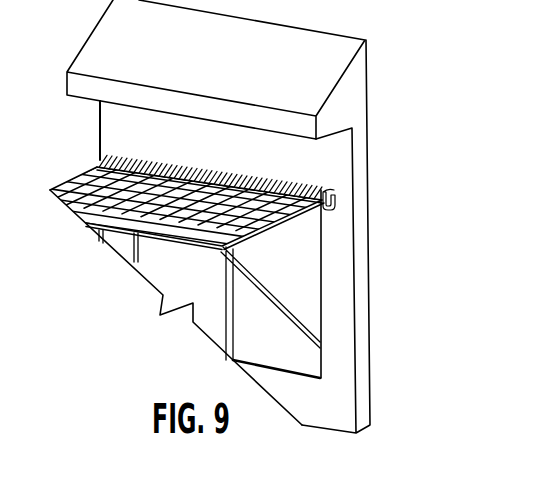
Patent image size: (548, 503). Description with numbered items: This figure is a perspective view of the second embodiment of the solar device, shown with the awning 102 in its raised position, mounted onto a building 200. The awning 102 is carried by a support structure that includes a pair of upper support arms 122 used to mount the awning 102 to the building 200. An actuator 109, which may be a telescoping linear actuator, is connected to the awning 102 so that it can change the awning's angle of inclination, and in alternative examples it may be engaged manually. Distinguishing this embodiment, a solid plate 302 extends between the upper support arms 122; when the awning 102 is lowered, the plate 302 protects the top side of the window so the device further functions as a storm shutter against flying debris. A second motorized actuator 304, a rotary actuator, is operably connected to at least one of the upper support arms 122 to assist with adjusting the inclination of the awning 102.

The building 200 is at (336, 133).
The awning 102 is at (94, 160).
The upper support arm 122 is at (117, 162).
The solid plate 302 is at (201, 174).
The second motorized actuator 304 is at (326, 191).
The actuator 109 is at (267, 314).